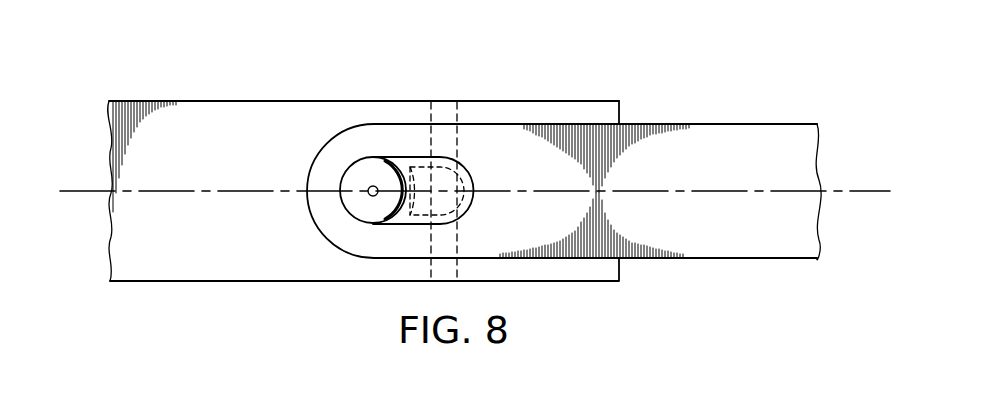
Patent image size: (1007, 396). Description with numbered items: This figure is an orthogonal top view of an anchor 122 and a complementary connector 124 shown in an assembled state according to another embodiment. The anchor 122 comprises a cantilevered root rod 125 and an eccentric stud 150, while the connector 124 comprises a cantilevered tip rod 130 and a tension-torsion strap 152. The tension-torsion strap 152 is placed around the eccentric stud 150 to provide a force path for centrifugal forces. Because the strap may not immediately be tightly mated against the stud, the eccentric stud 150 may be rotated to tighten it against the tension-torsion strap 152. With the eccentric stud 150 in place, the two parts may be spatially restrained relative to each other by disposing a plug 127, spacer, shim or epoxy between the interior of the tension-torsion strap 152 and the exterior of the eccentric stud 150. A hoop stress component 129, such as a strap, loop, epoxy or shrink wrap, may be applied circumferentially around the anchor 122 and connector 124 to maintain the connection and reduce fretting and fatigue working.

The anchor 122 is at (205, 101).
The connector 124 is at (787, 124).
The root rod 125 is at (292, 108).
The plug 127 is at (422, 173).
The hoop stress component 129 is at (465, 140).
The tip rod 130 is at (738, 132).
The eccentric stud 150 is at (342, 200).
The tension-torsion strap 152 is at (314, 180).